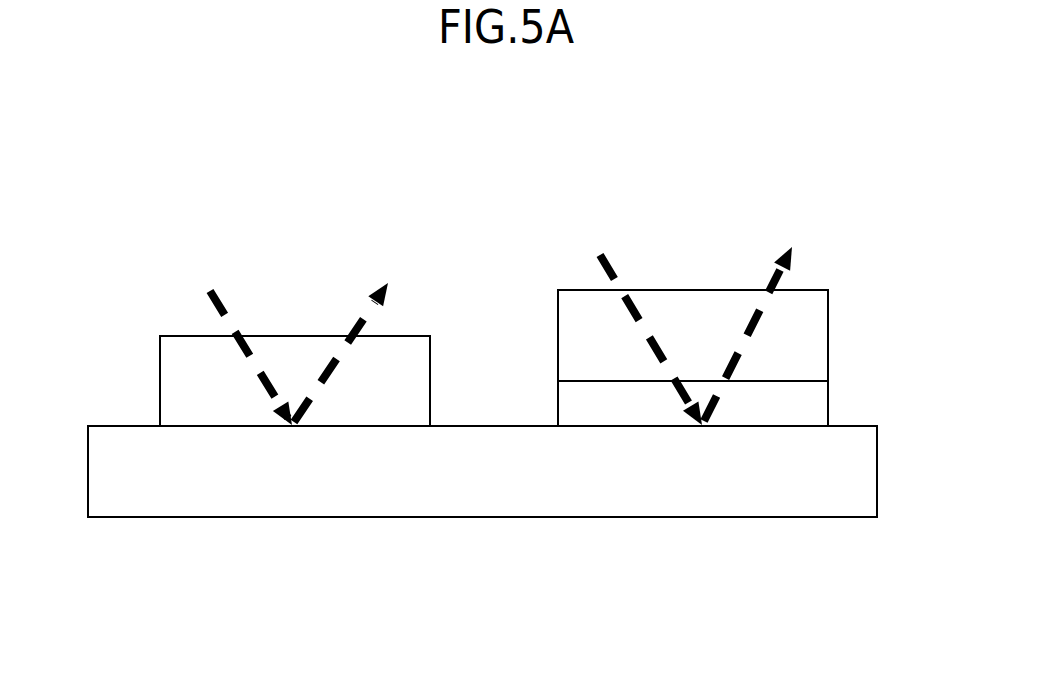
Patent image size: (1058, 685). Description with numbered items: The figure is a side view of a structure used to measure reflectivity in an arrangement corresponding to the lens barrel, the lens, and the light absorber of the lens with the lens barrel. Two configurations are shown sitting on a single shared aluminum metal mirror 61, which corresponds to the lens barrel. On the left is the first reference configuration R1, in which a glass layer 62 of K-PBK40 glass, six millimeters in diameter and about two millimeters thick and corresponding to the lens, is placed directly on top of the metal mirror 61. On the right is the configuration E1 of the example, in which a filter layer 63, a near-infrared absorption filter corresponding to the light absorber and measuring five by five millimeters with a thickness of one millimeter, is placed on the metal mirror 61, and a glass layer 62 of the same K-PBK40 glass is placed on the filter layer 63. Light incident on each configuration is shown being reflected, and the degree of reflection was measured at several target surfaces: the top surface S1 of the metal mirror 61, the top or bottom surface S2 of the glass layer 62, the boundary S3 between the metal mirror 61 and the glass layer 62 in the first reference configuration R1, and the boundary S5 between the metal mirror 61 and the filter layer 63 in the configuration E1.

The metal mirror 61 is at (485, 492).
The glass layer 62 is at (173, 362).
The filter layer 63 is at (805, 397).
The first reference configuration R1 is at (298, 215).
The configuration E1 is at (701, 215).
The top surface of the metal mirror S1 is at (483, 425).
The top surface or bottom surface of the glass layer S2 is at (205, 335).
The boundary between the metal mirror and the glass layer S3 is at (195, 425).
The boundary between the metal mirror and the filter layer S5 is at (745, 426).